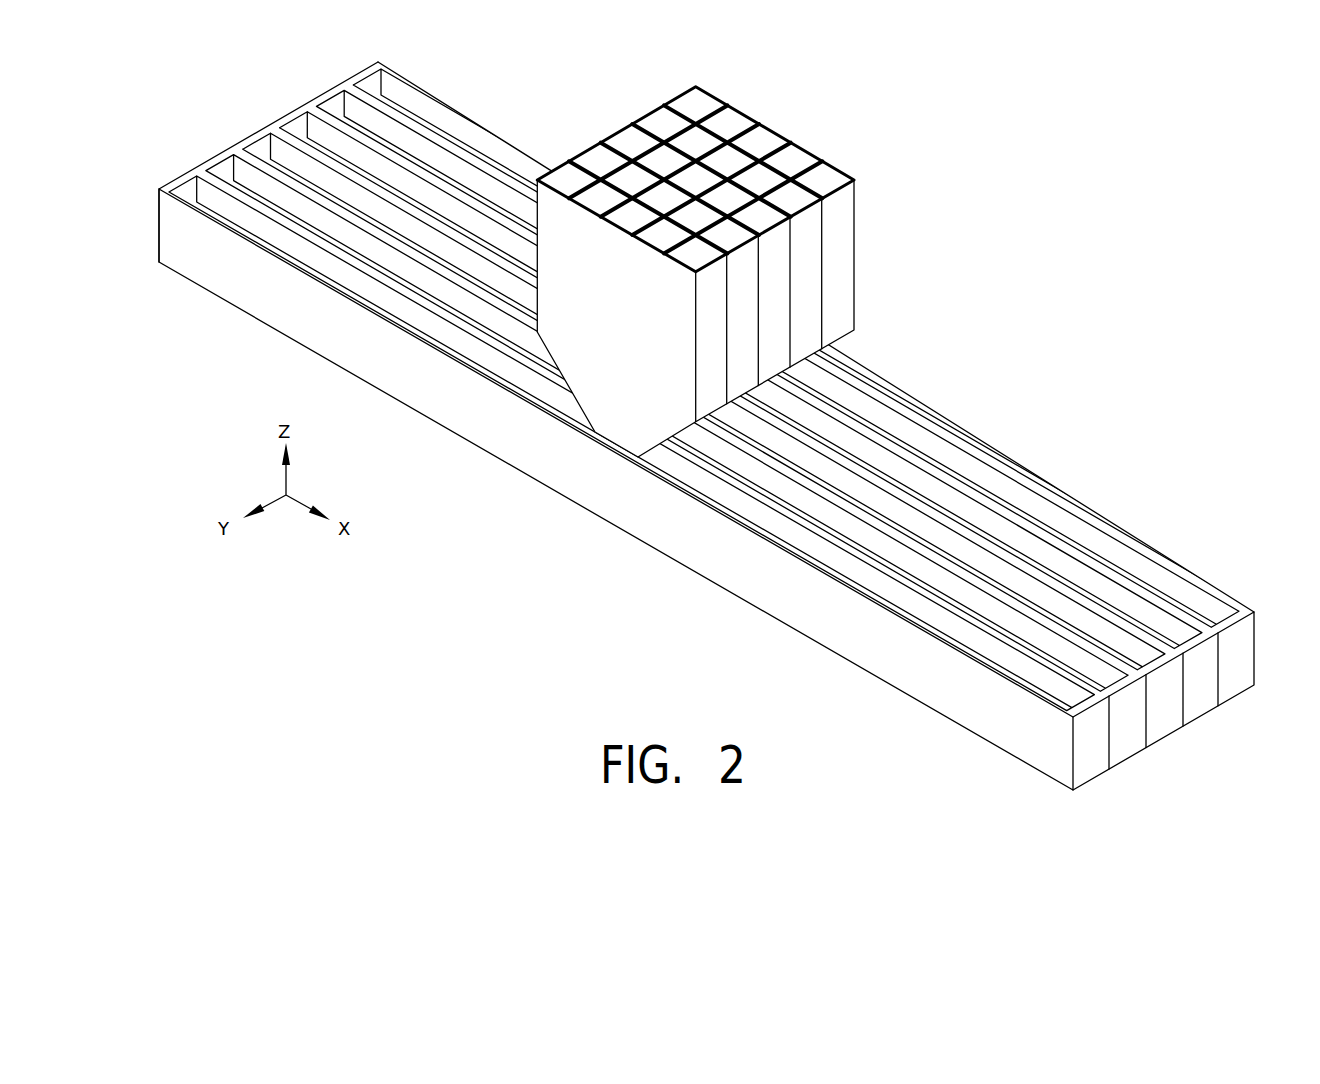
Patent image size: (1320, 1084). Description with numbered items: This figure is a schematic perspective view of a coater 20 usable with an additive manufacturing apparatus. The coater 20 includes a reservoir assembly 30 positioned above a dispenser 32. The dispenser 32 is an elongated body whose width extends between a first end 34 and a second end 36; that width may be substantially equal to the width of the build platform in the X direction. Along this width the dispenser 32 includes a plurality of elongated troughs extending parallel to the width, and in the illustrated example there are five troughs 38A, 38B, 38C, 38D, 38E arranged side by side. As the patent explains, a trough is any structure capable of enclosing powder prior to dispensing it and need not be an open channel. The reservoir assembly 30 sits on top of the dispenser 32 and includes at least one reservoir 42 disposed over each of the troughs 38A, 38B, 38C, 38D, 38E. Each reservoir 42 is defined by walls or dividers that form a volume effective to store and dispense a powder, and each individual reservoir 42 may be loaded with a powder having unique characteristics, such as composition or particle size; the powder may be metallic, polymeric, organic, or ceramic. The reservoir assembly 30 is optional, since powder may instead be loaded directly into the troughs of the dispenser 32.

The coater 20 is at (714, 442).
The reservoir assembly 30 is at (742, 272).
The dispenser 32 is at (714, 442).
The first end 34 is at (159, 262).
The second end 36 is at (1072, 791).
The trough 38A is at (638, 469).
The trough 38B is at (1145, 742).
The trough 38C is at (1182, 721).
The trough 38D is at (1217, 700).
The trough 38E is at (1253, 680).
The reservoir 42 is at (807, 144).